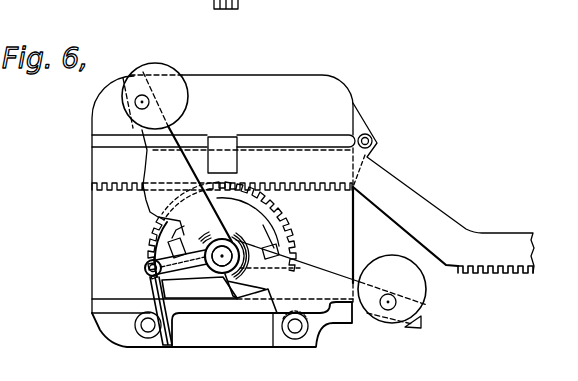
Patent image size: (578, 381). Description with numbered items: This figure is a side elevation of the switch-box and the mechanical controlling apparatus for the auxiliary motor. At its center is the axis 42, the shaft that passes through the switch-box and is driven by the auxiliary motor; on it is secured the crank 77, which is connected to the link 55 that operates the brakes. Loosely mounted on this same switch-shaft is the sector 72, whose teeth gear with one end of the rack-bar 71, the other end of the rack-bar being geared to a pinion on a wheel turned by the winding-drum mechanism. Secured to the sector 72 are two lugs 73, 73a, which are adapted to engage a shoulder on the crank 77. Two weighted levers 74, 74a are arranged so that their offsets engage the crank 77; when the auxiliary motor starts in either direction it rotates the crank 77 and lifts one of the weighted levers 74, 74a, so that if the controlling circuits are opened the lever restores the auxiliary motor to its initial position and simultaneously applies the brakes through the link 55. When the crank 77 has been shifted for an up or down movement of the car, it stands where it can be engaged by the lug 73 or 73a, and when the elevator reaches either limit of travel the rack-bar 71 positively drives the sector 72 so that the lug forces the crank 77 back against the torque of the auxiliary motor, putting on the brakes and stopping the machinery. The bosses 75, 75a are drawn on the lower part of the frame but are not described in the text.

The axis 42 is at (224, 257).
The link 55 is at (213, 289).
The rack-bar 71 is at (443, 188).
The sector 72 is at (224, 230).
The lug 73 is at (174, 247).
The lug 73a is at (286, 223).
The weighted lever 74 is at (168, 133).
The weighted lever 74a is at (312, 277).
The boss 75 is at (146, 312).
The boss 75a is at (287, 326).
The crank 77 is at (146, 266).